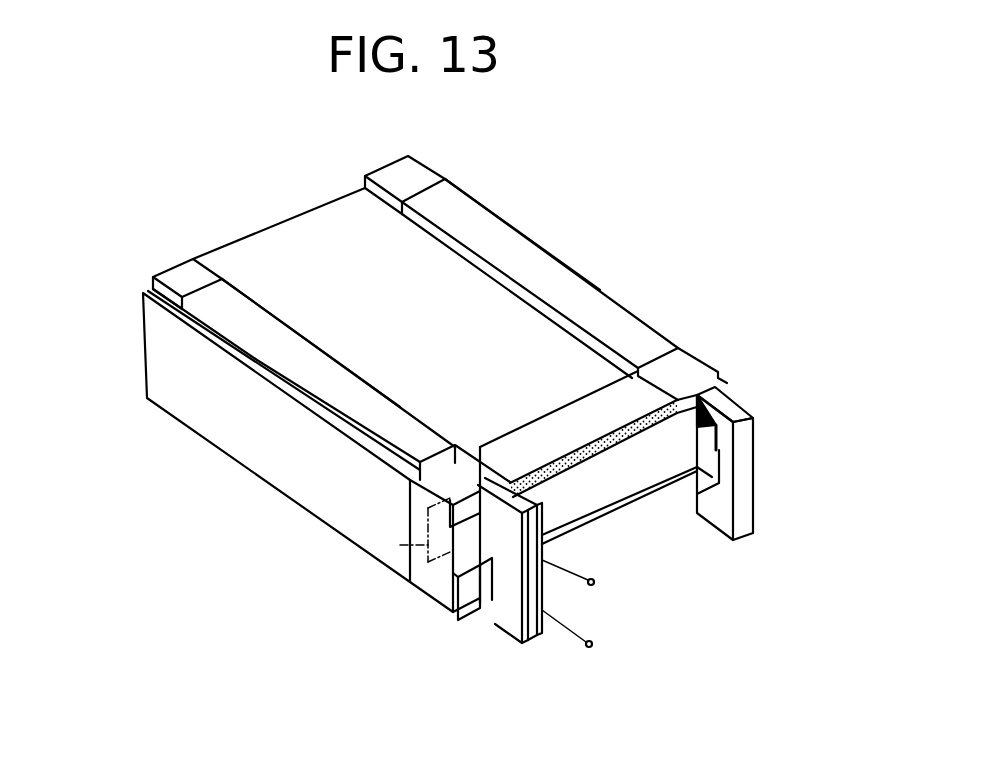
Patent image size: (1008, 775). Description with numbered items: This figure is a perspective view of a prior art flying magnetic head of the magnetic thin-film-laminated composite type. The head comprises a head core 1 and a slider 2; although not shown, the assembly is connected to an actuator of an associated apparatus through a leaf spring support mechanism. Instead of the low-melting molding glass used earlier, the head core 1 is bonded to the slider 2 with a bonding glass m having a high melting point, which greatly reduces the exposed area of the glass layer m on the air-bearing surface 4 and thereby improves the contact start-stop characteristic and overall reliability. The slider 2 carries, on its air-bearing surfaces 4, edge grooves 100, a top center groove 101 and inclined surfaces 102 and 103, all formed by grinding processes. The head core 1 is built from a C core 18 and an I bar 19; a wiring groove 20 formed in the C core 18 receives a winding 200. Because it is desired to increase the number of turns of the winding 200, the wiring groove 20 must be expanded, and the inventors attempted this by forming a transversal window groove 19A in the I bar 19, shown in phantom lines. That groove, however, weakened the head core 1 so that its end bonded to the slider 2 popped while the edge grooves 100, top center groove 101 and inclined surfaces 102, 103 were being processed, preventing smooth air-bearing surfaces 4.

The head core 1 is at (732, 370).
The slider 2 is at (598, 304).
The air-bearing surface 4 is at (312, 342).
The C core 18 is at (508, 620).
The I bar 19 is at (432, 582).
The transversal window groove 19A is at (395, 560).
The wiring groove 20 is at (492, 586).
The edge grooves 100 is at (258, 368).
The top center groove 101 is at (277, 250).
The inclined surfaces 102 is at (183, 270).
The inclined surfaces 103 is at (740, 405).
The winding 200 is at (580, 624).
The bonding glass m is at (455, 446).